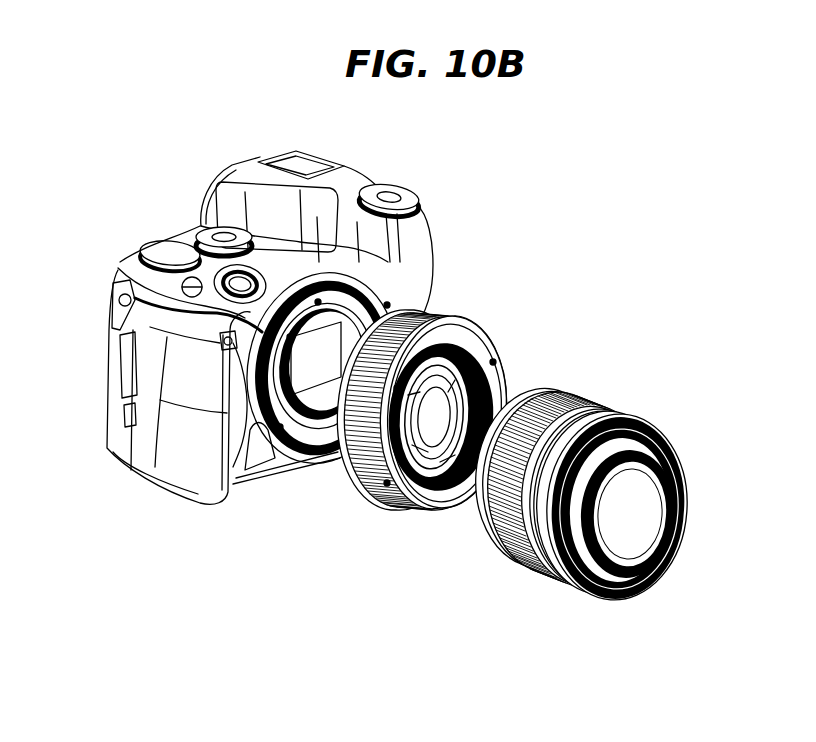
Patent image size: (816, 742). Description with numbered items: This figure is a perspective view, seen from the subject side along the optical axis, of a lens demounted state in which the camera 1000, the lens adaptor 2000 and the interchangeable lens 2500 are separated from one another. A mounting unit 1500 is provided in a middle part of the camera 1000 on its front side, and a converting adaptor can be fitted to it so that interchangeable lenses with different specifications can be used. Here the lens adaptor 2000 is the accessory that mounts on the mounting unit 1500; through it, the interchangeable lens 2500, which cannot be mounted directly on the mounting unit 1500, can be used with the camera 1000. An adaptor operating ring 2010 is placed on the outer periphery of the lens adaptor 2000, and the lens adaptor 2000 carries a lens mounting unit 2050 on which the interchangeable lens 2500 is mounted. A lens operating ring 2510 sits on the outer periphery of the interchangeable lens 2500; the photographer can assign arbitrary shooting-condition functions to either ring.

The camera 1000 is at (377, 160).
The mounting unit 1500 is at (363, 288).
The lens adaptor 2000 is at (482, 424).
The adaptor operating ring 2010 is at (370, 490).
The lens mounting unit 2050 is at (500, 340).
The interchangeable lens 2500 is at (585, 532).
The lens operating ring 2510 is at (522, 578).